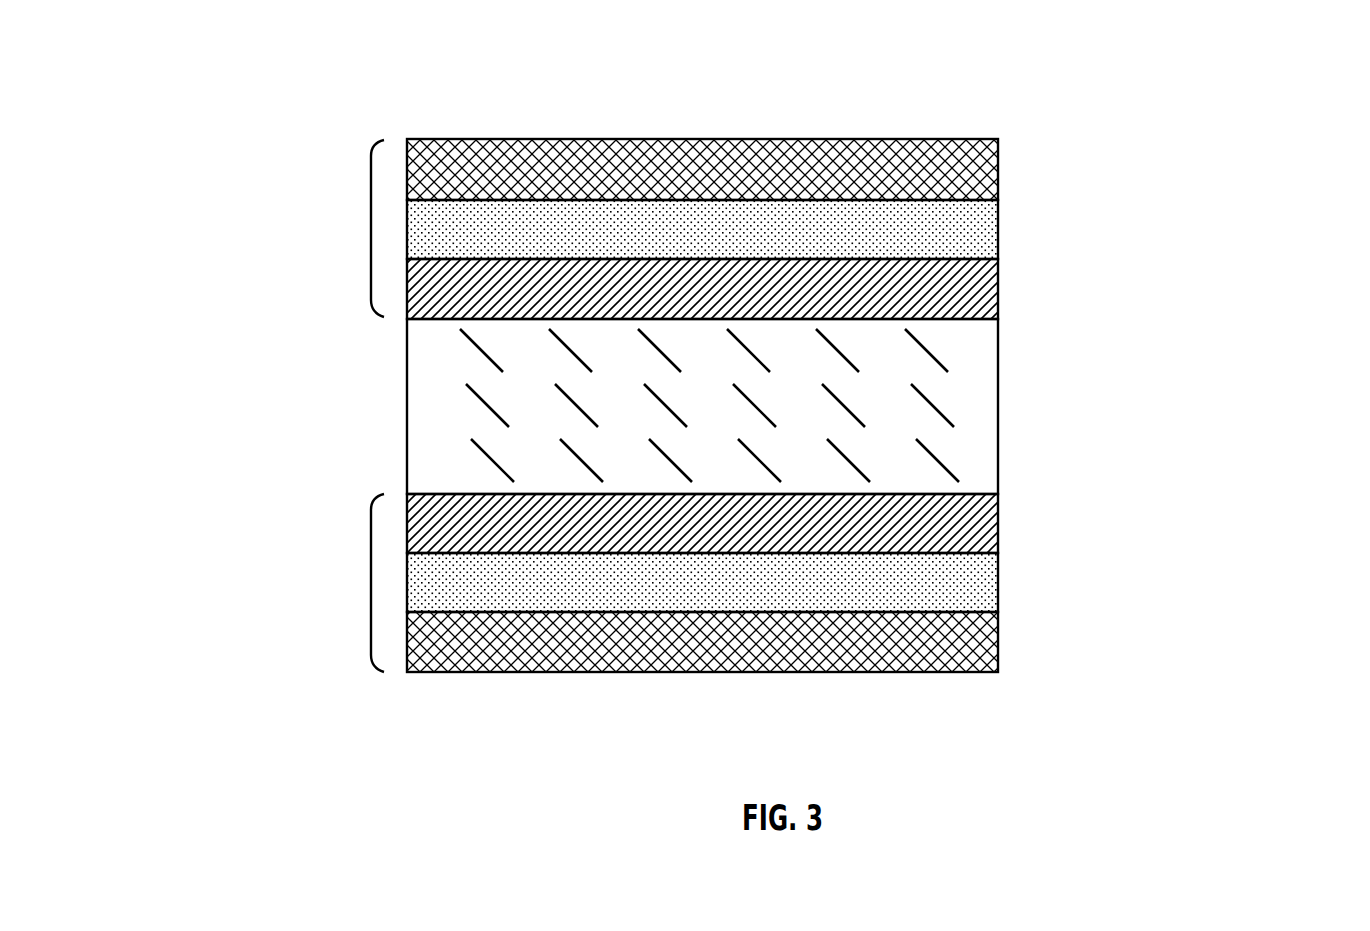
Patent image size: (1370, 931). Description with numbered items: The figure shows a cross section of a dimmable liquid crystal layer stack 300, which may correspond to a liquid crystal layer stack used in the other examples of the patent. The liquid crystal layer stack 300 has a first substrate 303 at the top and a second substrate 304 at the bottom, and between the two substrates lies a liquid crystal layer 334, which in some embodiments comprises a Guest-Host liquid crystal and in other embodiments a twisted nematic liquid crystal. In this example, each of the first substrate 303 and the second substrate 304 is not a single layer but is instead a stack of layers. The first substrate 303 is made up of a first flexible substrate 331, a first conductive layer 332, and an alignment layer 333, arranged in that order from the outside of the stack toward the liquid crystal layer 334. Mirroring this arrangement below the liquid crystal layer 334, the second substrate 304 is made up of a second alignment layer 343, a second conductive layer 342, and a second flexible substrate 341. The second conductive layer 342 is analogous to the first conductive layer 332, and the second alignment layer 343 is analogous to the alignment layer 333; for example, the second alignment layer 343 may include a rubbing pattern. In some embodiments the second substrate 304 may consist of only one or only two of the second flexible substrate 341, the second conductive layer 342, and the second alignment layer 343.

The liquid crystal layer stack 300 is at (370, 93).
The first substrate 303 is at (371, 228).
The second substrate 304 is at (371, 584).
The first flexible substrate 331 is at (972, 173).
The first conductive layer 332 is at (972, 230).
The alignment layer 333 is at (978, 290).
The liquid crystal layer 334 is at (977, 408).
The second flexible substrate 341 is at (985, 655).
The second conductive layer 342 is at (972, 585).
The second alignment layer 343 is at (976, 527).